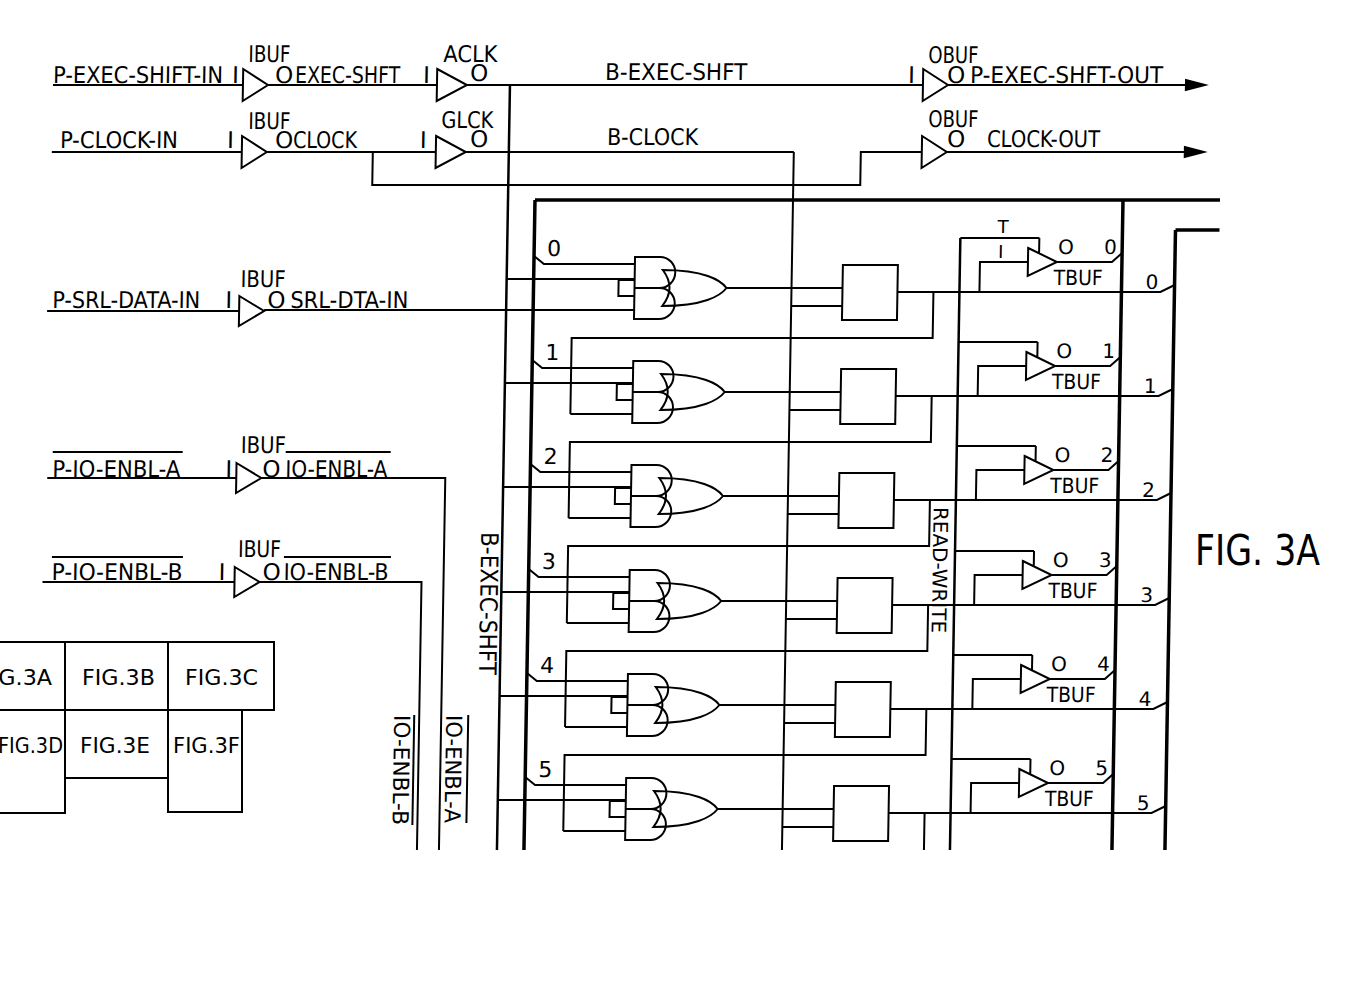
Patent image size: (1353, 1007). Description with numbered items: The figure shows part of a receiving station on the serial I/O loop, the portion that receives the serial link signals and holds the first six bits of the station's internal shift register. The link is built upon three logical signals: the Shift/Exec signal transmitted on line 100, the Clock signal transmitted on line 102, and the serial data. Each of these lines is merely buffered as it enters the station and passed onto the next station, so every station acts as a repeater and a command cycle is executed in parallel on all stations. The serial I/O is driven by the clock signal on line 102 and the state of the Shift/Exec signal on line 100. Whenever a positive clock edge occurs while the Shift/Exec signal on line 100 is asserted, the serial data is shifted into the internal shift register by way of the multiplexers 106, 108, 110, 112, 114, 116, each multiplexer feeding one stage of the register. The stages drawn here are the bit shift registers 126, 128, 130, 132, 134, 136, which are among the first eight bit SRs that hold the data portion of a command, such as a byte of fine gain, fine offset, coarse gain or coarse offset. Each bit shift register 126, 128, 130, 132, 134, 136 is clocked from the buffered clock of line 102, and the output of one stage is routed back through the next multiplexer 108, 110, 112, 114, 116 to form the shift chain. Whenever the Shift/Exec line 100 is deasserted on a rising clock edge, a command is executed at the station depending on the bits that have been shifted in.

The Shift/Exec signal line 100 is at (505, 58).
The Clock signal line 102 is at (531, 149).
The multiplexer 106 is at (721, 297).
The multiplexer 108 is at (721, 401).
The multiplexer 110 is at (721, 505).
The multiplexer 112 is at (721, 610).
The multiplexer 114 is at (721, 714).
The multiplexer 116 is at (721, 818).
The bit shift register 126 is at (889, 265).
The bit shift register 128 is at (899, 380).
The bit shift register 130 is at (899, 488).
The bit shift register 132 is at (844, 583).
The bit shift register 134 is at (899, 695).
The bit shift register 136 is at (899, 799).